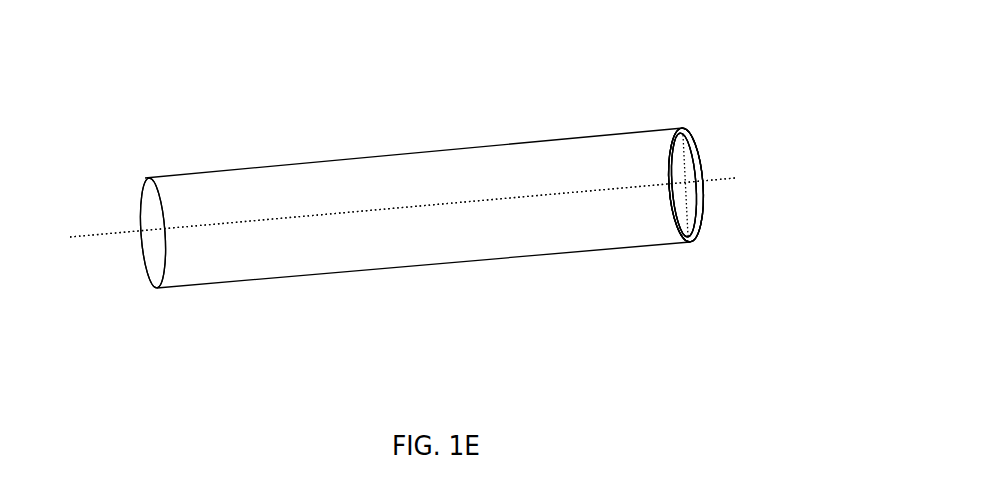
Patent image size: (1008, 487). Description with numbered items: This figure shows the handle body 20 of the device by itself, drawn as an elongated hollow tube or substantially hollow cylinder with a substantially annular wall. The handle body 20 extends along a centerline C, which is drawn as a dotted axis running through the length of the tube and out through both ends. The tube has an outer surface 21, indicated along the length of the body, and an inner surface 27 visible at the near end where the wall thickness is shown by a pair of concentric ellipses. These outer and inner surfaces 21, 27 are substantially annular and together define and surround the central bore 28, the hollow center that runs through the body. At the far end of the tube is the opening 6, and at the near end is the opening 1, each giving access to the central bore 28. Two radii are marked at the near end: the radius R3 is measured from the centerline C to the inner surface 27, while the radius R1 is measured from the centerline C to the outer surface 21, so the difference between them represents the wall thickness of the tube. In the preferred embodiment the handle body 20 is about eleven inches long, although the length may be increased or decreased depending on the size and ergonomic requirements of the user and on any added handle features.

The handle body 20 is at (552, 140).
The outer surface 21 is at (402, 207).
The inner surface 27 is at (686, 128).
The opening 6 is at (144, 242).
The opening 1 is at (699, 170).
The central bore 28 is at (699, 193).
The radius to inner surface R3 is at (693, 153).
The radius to outer surface R1 is at (695, 216).
The centerline C is at (400, 208).